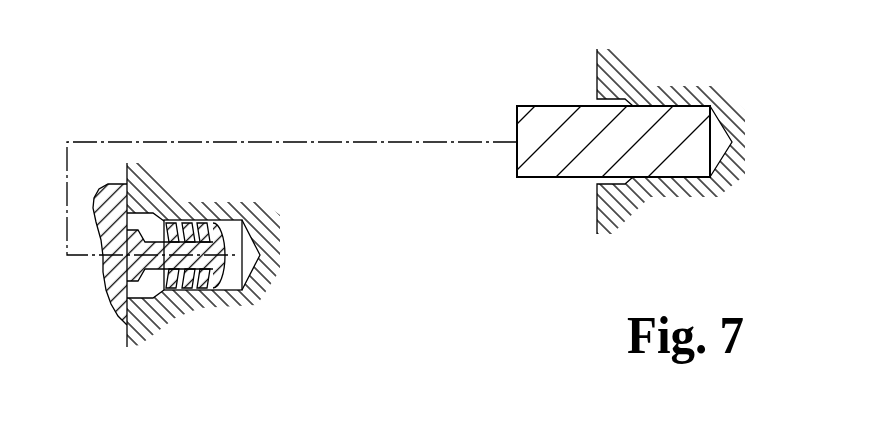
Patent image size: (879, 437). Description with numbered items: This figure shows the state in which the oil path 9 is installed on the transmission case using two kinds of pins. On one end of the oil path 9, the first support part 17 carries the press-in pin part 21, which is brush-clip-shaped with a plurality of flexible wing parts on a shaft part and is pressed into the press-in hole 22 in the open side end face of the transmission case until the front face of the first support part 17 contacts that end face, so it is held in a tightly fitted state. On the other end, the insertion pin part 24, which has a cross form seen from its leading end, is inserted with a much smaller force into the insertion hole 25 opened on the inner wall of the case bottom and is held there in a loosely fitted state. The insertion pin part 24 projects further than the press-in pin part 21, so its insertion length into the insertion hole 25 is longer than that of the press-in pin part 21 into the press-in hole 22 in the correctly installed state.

The oil path 9 is at (360, 139).
The first support part 17 is at (108, 283).
The press-in pin part 21 is at (200, 262).
The press-in hole 22 is at (250, 266).
The insertion pin part 24 is at (659, 110).
The insertion hole 25 is at (721, 146).